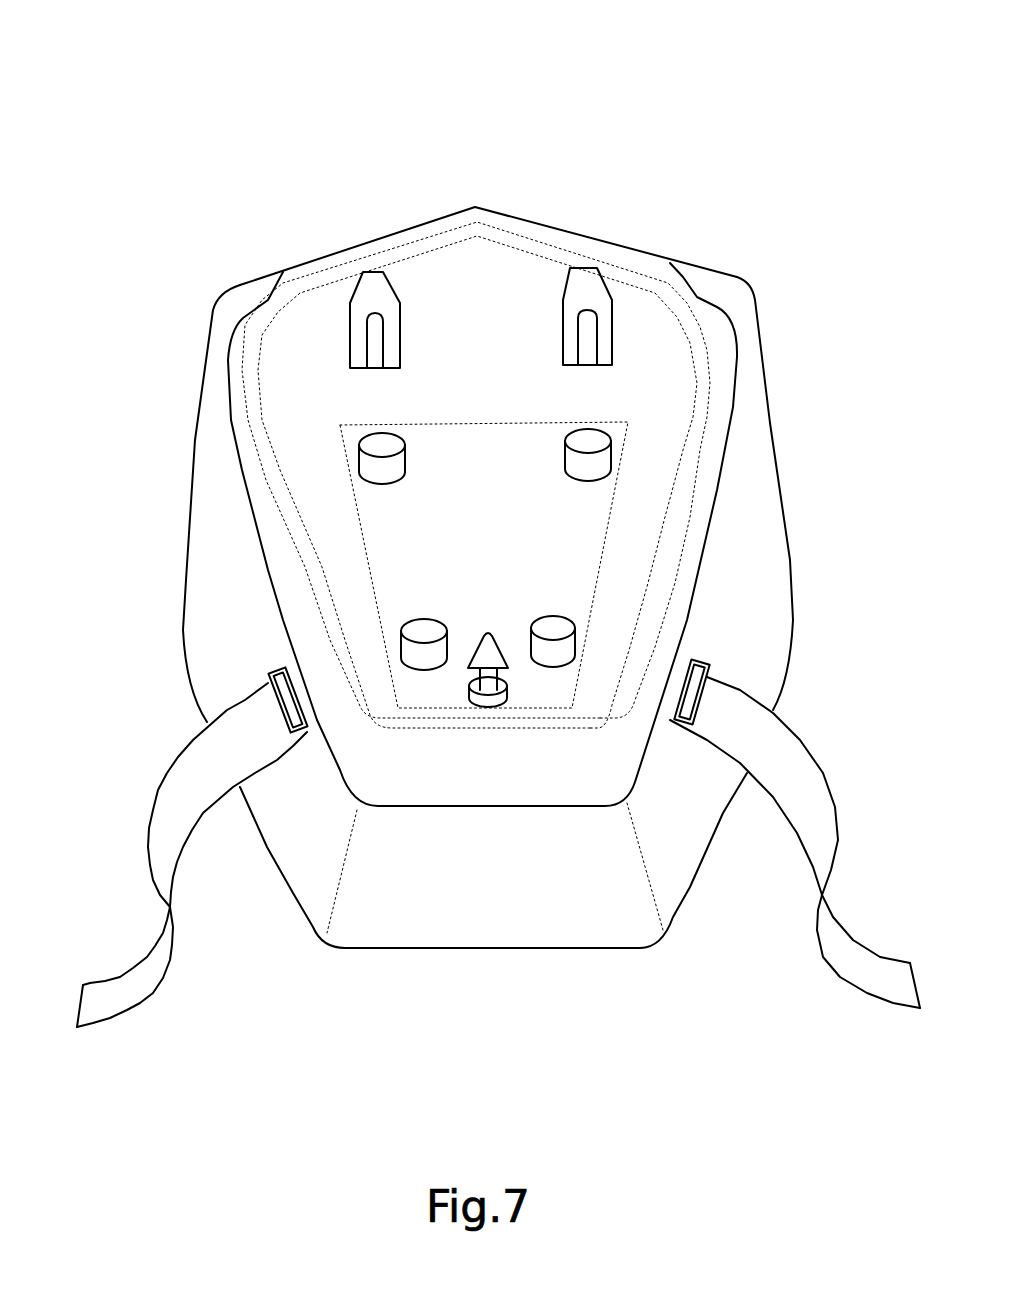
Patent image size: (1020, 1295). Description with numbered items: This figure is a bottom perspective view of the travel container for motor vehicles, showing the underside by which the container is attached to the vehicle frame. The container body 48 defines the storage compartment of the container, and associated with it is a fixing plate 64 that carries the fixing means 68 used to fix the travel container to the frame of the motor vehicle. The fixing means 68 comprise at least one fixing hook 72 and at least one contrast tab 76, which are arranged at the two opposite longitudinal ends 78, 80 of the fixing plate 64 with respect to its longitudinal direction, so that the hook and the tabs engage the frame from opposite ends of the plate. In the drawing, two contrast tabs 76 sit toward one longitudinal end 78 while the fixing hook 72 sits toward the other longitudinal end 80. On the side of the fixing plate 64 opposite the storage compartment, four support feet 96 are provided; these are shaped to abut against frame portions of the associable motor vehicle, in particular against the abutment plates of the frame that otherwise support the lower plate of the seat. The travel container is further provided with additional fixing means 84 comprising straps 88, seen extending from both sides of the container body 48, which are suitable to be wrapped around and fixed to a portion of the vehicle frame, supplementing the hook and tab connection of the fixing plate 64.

The container body 48 is at (220, 555).
The fixing plate 64 is at (667, 360).
The fixing means 68 is at (479, 580).
The fixing hook 72 is at (490, 660).
The contrast tab 76 is at (370, 287).
The longitudinal end 78 is at (483, 186).
The longitudinal end 80 is at (504, 850).
The additional fixing means 84 is at (498, 898).
The strap 88 is at (800, 773).
The support feet 96 is at (567, 453).